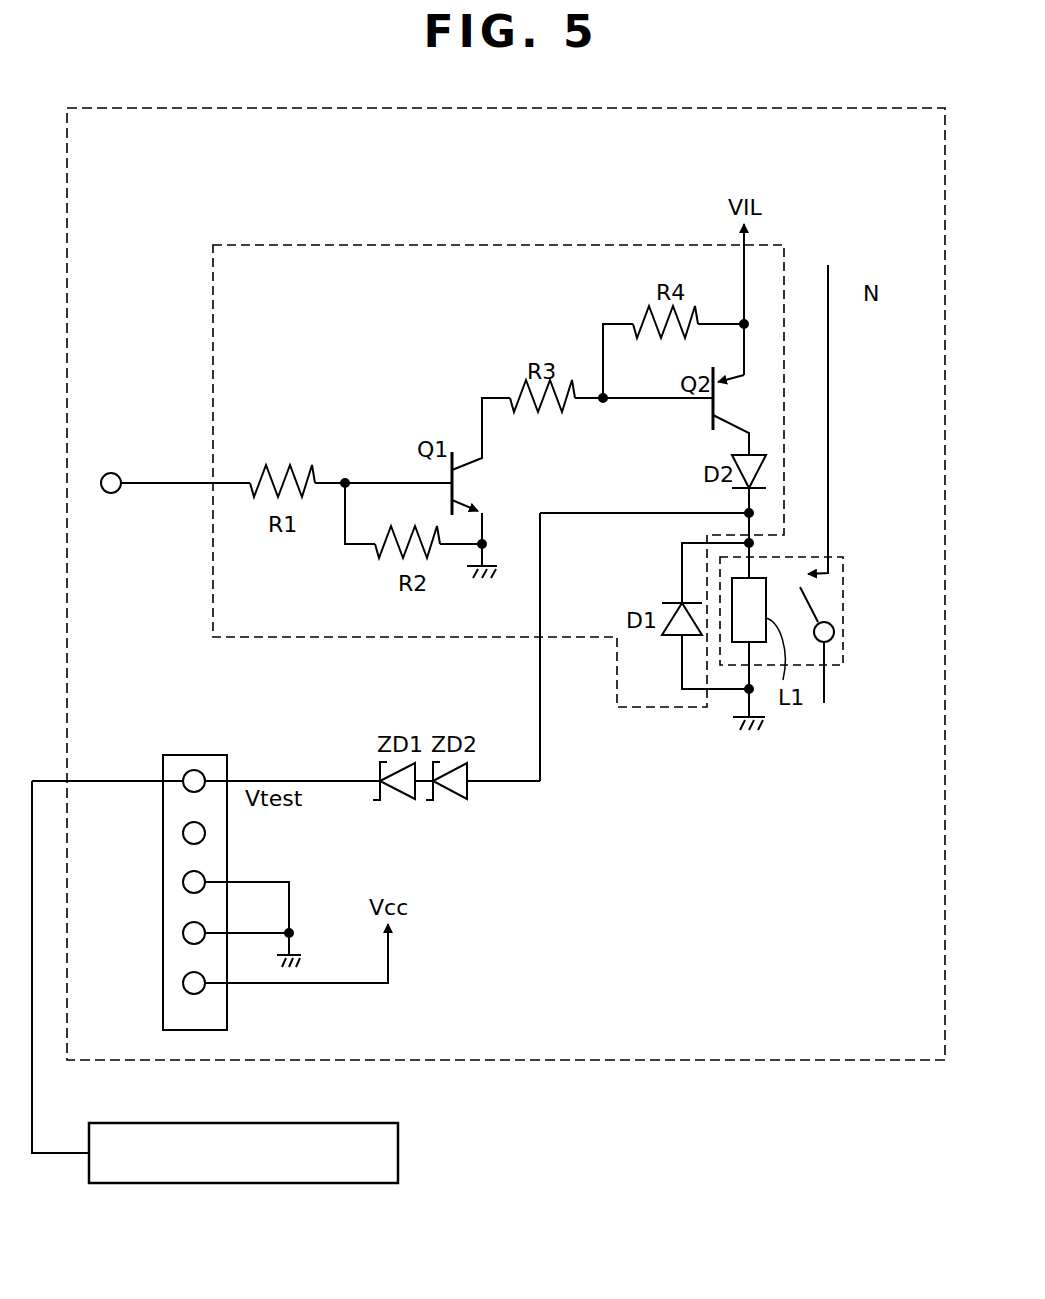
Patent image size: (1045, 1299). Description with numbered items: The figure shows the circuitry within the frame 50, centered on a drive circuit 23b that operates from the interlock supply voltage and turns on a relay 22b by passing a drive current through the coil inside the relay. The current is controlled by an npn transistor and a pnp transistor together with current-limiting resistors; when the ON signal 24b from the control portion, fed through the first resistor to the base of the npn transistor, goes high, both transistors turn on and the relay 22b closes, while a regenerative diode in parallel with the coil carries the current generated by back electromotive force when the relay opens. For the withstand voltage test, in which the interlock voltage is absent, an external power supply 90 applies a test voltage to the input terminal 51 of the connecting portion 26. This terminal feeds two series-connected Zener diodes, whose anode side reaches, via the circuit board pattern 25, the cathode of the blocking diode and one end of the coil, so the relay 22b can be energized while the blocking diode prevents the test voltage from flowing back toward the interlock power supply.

The frame 50 is at (860, 107).
The drive circuit 23b is at (428, 244).
The ON signal 24b is at (113, 472).
The relay 22b is at (843, 580).
The connecting portion 26 is at (175, 755).
The input terminal 51 is at (191, 771).
The circuit board pattern 25 is at (540, 742).
The external power supply 90 is at (398, 1150).